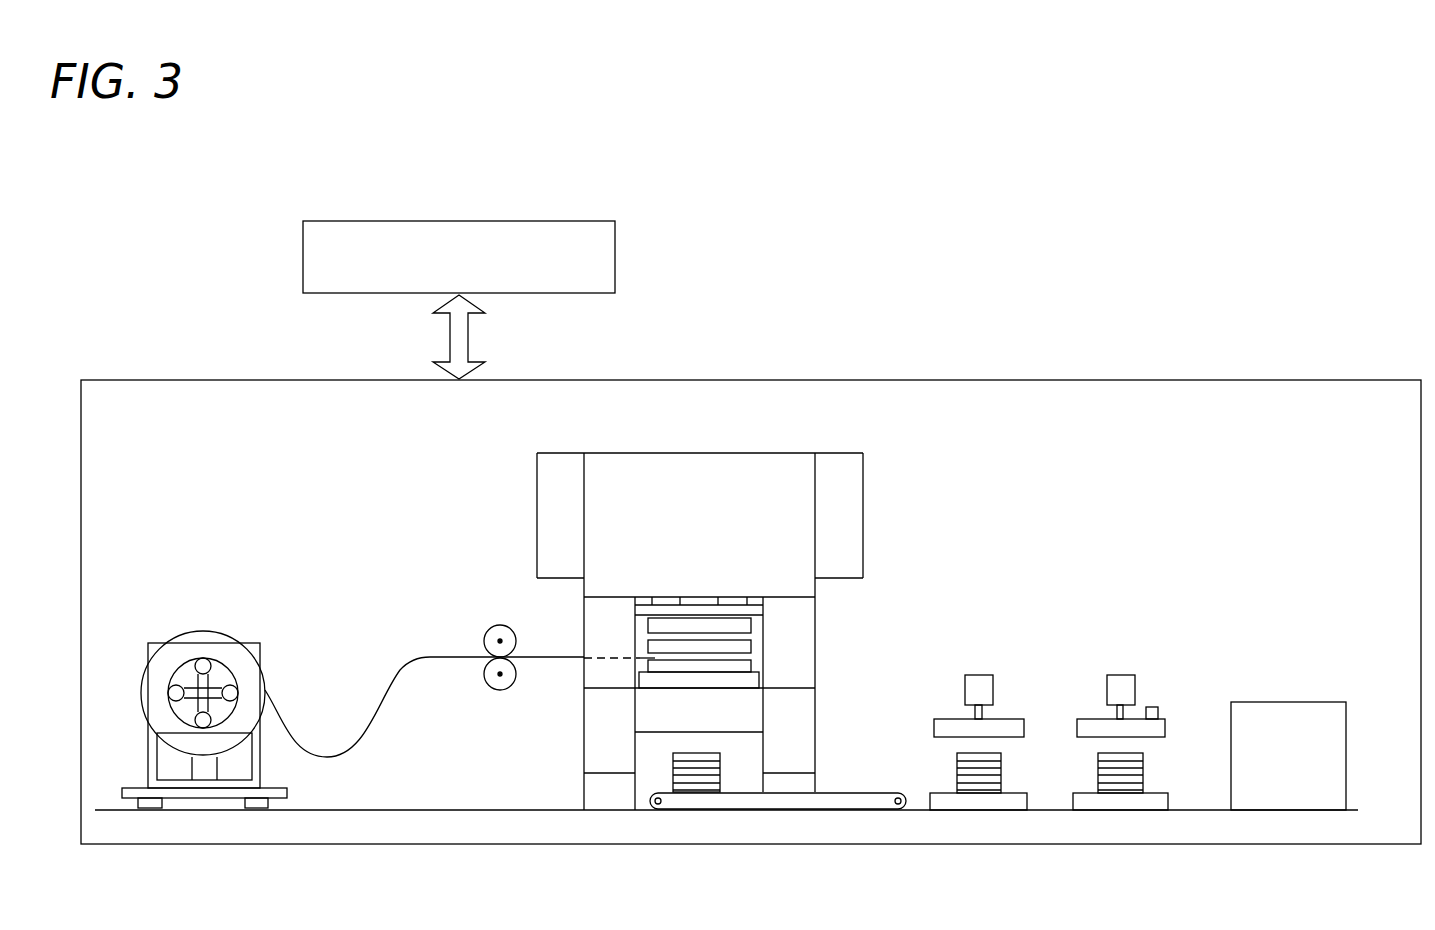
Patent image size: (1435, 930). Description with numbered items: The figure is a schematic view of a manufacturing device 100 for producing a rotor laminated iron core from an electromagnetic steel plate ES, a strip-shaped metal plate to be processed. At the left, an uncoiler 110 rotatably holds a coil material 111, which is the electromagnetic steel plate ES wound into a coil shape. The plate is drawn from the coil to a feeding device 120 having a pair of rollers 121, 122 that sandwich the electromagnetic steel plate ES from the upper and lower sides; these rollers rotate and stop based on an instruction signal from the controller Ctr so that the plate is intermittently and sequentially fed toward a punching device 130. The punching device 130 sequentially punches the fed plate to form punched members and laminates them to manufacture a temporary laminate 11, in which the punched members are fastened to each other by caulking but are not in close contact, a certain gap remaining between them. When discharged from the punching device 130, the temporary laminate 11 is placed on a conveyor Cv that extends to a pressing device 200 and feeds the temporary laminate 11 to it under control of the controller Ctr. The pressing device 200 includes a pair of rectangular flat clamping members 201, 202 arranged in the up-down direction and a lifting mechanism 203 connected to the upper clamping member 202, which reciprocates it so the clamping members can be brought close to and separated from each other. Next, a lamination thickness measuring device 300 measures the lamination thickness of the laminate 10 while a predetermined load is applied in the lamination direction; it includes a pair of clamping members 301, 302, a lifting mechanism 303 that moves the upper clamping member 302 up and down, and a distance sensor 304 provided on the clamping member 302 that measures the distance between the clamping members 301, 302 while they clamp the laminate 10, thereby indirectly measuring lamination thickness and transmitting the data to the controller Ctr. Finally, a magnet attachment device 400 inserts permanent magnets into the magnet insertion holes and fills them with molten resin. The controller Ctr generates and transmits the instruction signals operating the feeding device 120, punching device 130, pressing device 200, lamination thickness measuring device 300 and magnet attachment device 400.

The manufacturing device 100 is at (168, 252).
The controller Ctr is at (615, 257).
The uncoiler 110 is at (158, 643).
The coil material 111 is at (203, 631).
The electromagnetic steel plate ES is at (287, 718).
The feeding device 120 is at (498, 632).
The roller 121 is at (513, 626).
The roller 122 is at (513, 686).
The punching device 130 is at (899, 460).
The temporary laminate 11 is at (643, 760).
The conveyor Cv is at (853, 792).
The pressing device 200 is at (957, 735).
The clamping member 201 is at (930, 798).
The clamping member 202 is at (933, 727).
The lifting mechanism 203 is at (993, 688).
The laminate 10 is at (1080, 764).
The lamination thickness measuring device 300 is at (1106, 735).
The clamping member 301 is at (1073, 798).
The clamping member 302 is at (1077, 727).
The lifting mechanism 303 is at (1135, 692).
The distance sensor 304 is at (1158, 712).
The magnet attachment device 400 is at (1285, 702).